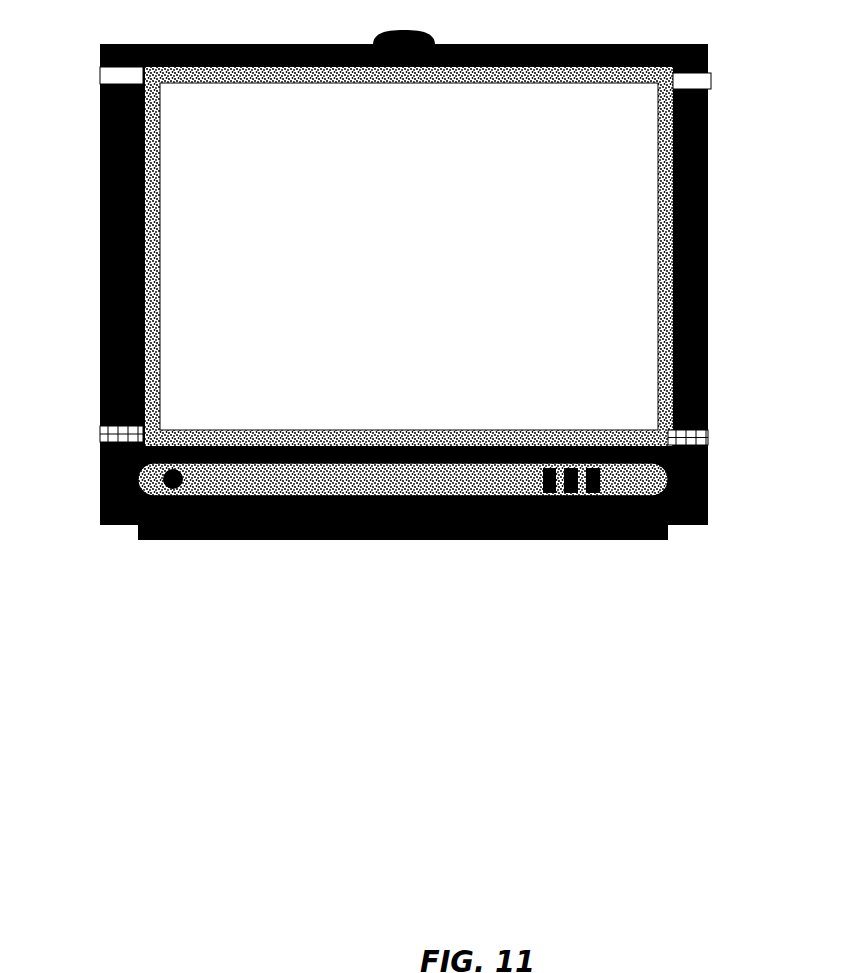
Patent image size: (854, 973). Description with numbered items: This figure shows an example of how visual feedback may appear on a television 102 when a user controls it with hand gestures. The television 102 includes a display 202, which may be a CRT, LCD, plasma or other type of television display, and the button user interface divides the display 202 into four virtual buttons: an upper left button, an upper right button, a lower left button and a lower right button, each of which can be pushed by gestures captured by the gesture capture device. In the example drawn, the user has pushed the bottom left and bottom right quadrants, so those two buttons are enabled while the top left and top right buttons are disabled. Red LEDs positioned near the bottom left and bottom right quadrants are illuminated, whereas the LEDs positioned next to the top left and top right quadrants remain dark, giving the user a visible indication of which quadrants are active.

The television 102 is at (700, 243).
The display 202 is at (409, 256).